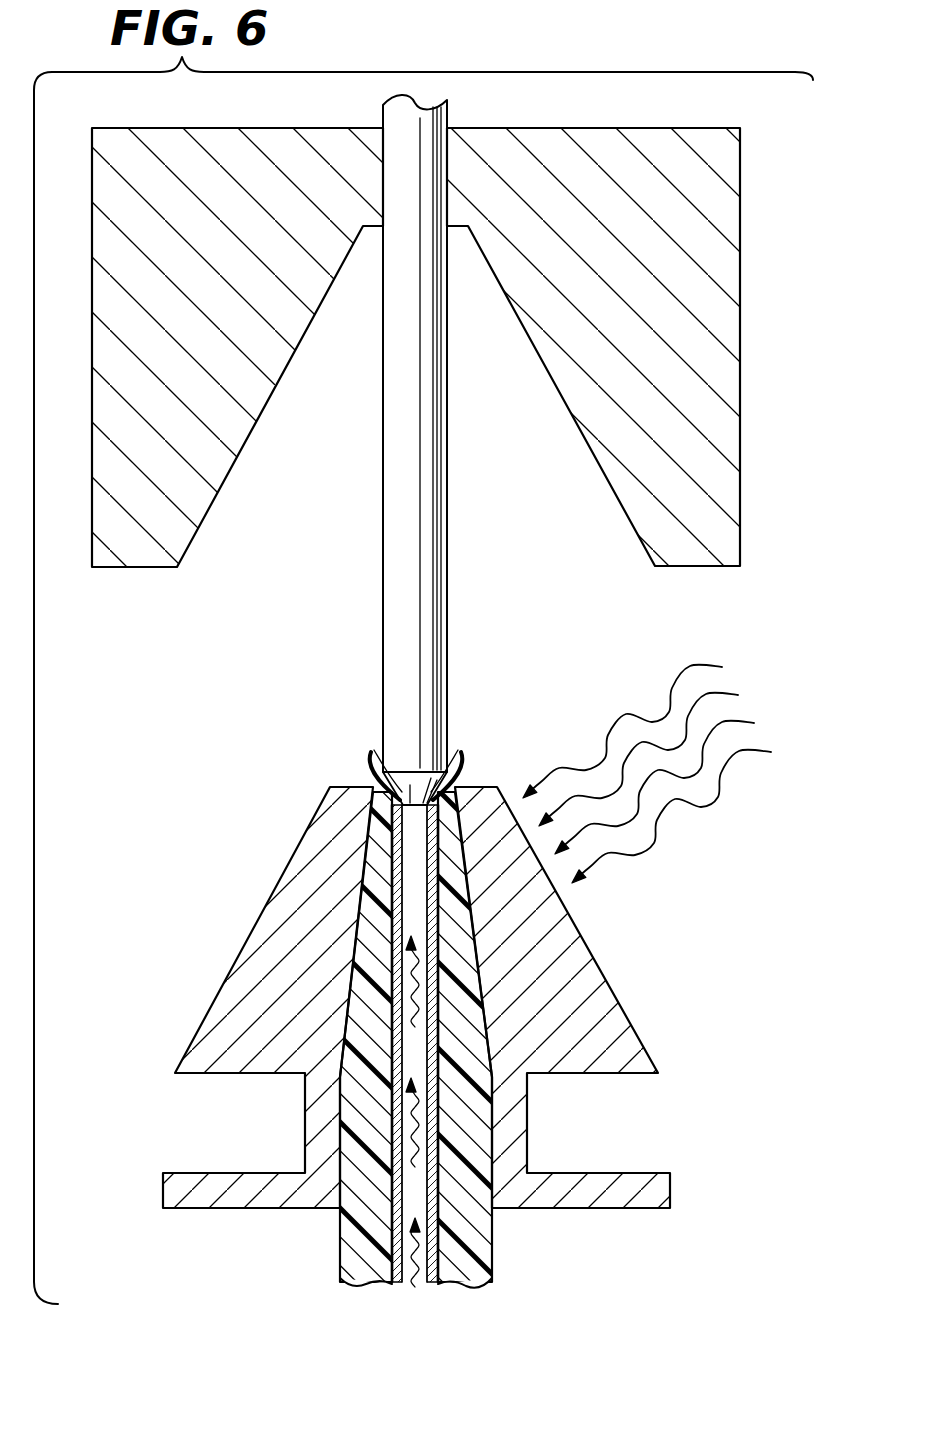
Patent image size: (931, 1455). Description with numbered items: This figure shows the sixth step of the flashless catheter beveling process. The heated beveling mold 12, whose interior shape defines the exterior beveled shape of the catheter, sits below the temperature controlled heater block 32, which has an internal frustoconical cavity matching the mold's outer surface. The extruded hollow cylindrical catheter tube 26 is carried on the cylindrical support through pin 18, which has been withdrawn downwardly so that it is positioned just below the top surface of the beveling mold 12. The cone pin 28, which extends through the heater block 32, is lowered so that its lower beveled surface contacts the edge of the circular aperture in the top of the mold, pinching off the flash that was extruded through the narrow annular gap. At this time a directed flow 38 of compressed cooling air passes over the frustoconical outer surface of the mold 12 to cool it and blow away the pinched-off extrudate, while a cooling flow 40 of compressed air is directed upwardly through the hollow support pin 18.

The beveling mold 12 is at (588, 925).
The support through pin 18 is at (432, 1285).
The catheter tube 26 is at (490, 1243).
The cone pin 28 is at (433, 695).
The temperature controlled heater block 32 is at (740, 322).
The directed flow of compressed cooling air 38 is at (602, 742).
The cooling flow of compressed air 40 is at (413, 1288).